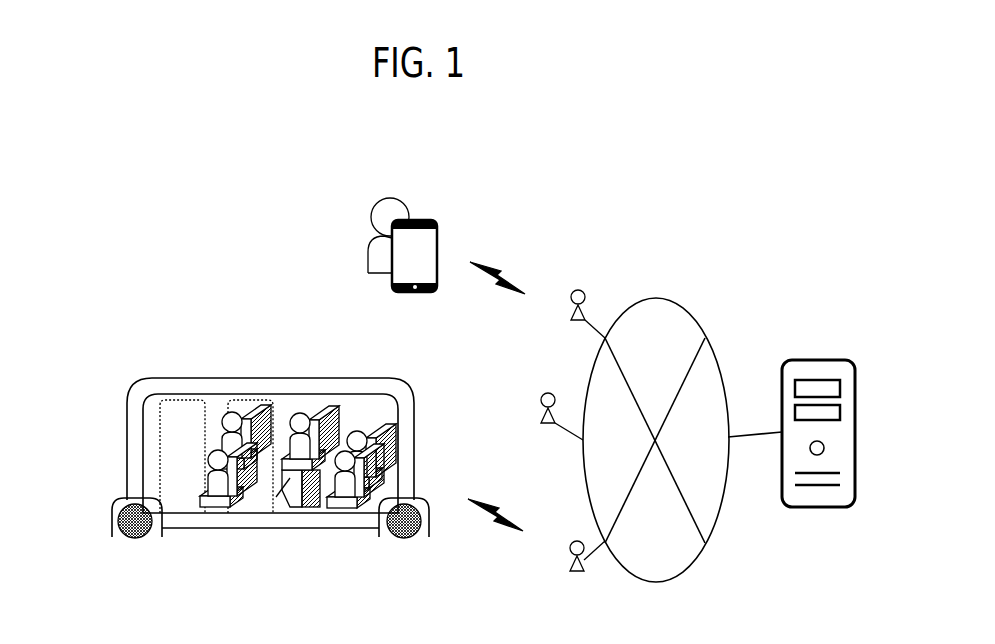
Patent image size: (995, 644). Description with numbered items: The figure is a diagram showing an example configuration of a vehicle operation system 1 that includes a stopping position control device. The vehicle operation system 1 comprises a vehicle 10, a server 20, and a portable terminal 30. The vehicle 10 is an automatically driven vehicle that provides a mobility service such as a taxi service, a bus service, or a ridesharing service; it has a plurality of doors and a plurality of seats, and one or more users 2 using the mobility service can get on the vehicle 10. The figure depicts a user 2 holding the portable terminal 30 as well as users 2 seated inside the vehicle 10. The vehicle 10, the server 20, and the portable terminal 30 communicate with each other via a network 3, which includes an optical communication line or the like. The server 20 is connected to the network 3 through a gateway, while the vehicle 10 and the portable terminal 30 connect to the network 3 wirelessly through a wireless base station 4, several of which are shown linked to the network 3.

The vehicle operation system 1 is at (787, 219).
The user 2 is at (392, 193).
The network 3 is at (657, 297).
The wireless base station 4 is at (578, 289).
The vehicle 10 is at (128, 442).
The server 20 is at (815, 360).
The portable terminal 30 is at (420, 220).